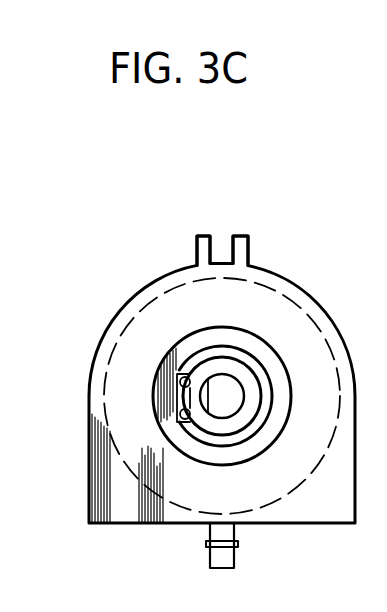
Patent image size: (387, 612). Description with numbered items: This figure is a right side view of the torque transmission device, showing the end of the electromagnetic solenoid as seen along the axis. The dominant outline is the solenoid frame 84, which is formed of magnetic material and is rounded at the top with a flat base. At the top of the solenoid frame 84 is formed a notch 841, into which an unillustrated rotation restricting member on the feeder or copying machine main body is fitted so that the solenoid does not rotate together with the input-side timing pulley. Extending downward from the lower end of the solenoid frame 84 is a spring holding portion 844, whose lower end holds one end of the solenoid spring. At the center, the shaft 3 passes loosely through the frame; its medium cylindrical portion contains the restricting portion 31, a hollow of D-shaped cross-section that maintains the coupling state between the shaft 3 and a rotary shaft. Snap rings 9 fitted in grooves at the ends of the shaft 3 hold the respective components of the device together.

The shaft 3 is at (263, 419).
The snap rings 9 is at (168, 414).
The restricting portion 31 is at (200, 385).
The solenoid frame 84 is at (328, 318).
The notch 841 is at (221, 250).
The spring holding portion 844 is at (202, 521).